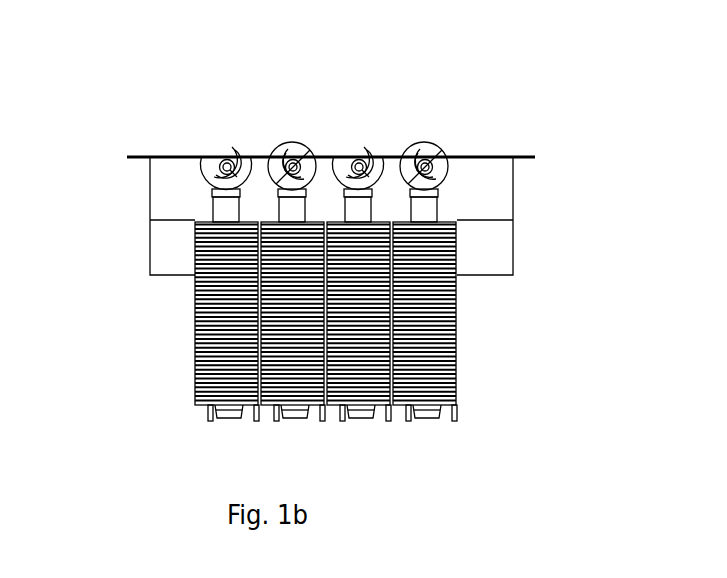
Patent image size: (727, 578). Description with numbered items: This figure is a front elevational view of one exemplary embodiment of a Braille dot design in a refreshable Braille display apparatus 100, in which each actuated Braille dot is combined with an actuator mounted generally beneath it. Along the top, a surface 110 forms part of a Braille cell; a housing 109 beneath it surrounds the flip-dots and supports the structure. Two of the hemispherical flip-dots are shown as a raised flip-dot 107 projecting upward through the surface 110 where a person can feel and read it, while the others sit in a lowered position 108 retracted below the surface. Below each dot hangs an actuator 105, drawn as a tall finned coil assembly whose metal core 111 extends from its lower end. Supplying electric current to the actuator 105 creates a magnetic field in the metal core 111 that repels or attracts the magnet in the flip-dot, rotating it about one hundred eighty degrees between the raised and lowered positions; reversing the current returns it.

The apparatus 100 is at (314, 262).
The actuator 105 is at (184, 392).
The raised flip-dot 107 is at (325, 141).
The lowered position 108 is at (247, 146).
The housing 109 is at (524, 186).
The surface 110 is at (178, 147).
The metal core 111 is at (307, 433).